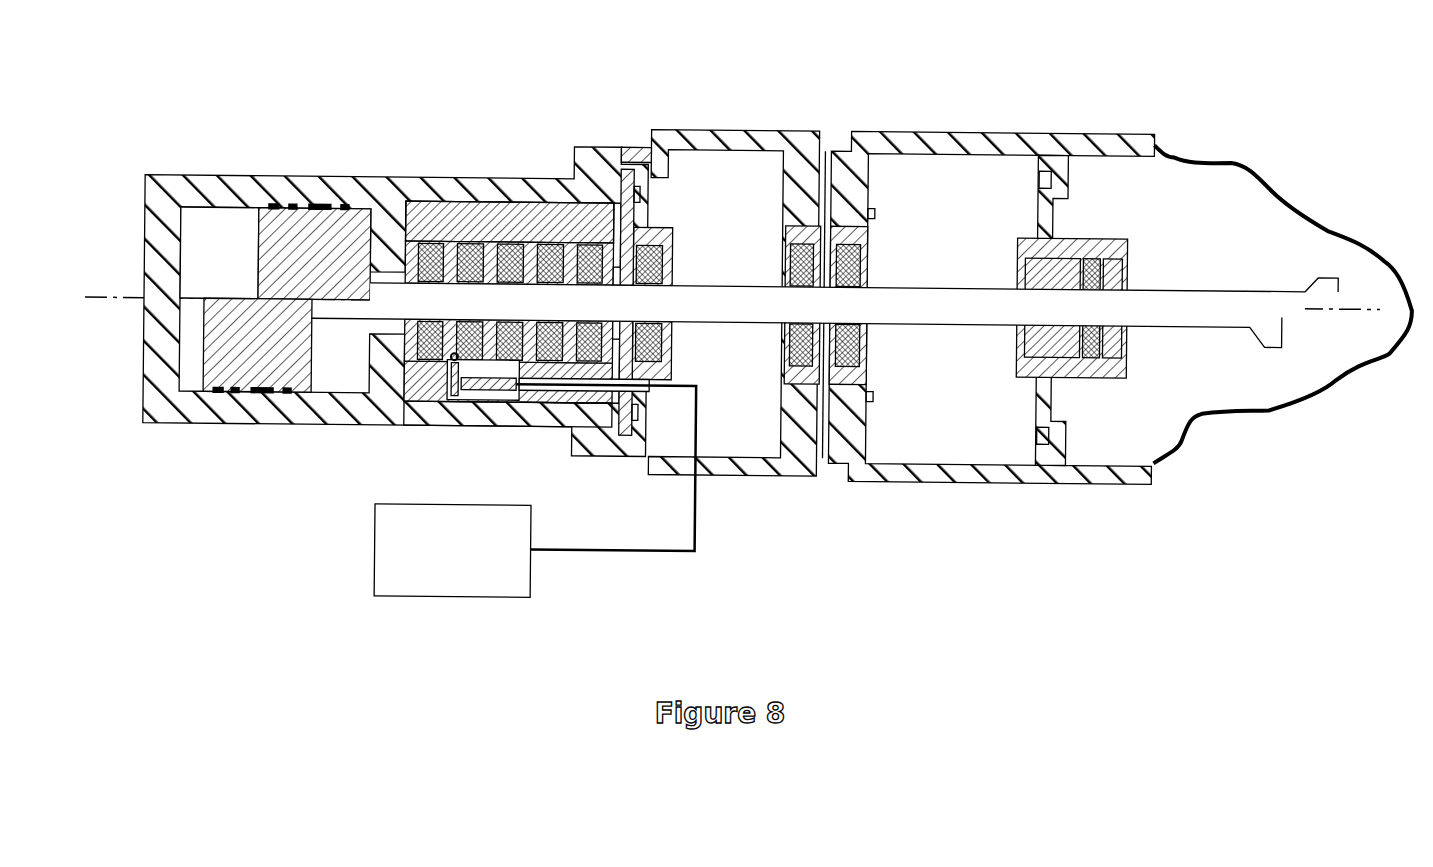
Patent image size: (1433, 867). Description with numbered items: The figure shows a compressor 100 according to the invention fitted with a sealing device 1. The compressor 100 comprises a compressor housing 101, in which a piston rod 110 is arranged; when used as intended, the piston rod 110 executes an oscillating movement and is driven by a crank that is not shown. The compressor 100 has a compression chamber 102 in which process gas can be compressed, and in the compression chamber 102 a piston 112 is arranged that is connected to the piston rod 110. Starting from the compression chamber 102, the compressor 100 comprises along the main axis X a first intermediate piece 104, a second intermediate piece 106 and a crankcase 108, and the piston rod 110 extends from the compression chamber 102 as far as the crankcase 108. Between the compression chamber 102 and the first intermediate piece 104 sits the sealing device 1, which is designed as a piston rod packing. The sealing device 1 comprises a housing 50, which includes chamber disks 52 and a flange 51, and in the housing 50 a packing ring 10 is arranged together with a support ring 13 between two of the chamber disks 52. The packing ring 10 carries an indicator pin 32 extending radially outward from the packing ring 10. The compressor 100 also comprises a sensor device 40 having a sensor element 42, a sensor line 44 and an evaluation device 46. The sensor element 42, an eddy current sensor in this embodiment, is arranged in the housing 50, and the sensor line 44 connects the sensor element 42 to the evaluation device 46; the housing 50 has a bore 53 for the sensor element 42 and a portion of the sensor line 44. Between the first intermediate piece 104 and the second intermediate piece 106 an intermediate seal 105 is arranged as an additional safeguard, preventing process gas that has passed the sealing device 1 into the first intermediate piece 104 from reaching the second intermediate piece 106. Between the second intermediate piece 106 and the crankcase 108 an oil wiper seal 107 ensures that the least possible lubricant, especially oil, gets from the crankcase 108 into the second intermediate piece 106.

The sealing device 1 is at (603, 289).
The packing ring 10 is at (450, 210).
The support ring 13 is at (477, 243).
The indicator pin 32 is at (424, 405).
The sensor device 40 is at (483, 524).
The sensor element 42 is at (477, 404).
The sensor line 44 is at (667, 558).
The evaluation device 46 is at (397, 528).
The housing 50 is at (411, 193).
The flange 51 is at (600, 185).
The chamber disks 52 is at (455, 411).
The bore 53 is at (553, 428).
The compressor 100 is at (750, 356).
The compressor housing 101 is at (488, 200).
The compression chamber 102 is at (208, 257).
The first intermediate piece 104 is at (723, 202).
The intermediate seal 105 is at (793, 219).
The second intermediate piece 106 is at (980, 192).
The oil wiper seal 107 is at (1110, 237).
The crankcase 108 is at (1183, 258).
The piston rod 110 is at (1185, 318).
The piston 112 is at (318, 260).
The main axis X is at (1348, 310).